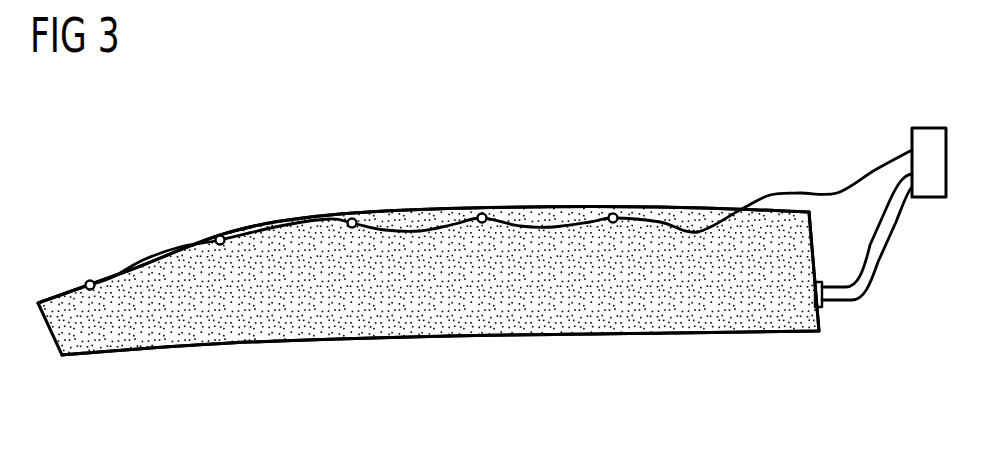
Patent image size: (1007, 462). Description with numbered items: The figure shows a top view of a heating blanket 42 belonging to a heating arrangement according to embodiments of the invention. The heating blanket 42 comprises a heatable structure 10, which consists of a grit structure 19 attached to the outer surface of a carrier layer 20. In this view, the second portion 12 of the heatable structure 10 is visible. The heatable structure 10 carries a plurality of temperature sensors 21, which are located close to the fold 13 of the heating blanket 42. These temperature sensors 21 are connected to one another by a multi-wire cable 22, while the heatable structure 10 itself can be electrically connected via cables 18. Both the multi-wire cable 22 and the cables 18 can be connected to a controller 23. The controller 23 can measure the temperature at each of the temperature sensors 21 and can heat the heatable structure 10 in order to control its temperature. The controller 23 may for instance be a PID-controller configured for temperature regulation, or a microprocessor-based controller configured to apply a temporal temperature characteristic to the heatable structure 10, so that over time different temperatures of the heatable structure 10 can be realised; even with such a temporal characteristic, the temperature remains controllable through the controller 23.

The heatable structure 10 is at (455, 330).
The second portion 12 is at (277, 322).
The fold 13 is at (287, 216).
The cables 18 is at (862, 284).
The grit structure 19 is at (677, 325).
The carrier layer 20 is at (552, 338).
The temperature sensors 21 is at (87, 280).
The multi-wire cable 22 is at (800, 192).
The controller 23 is at (928, 128).
The heating blanket 42 is at (420, 218).